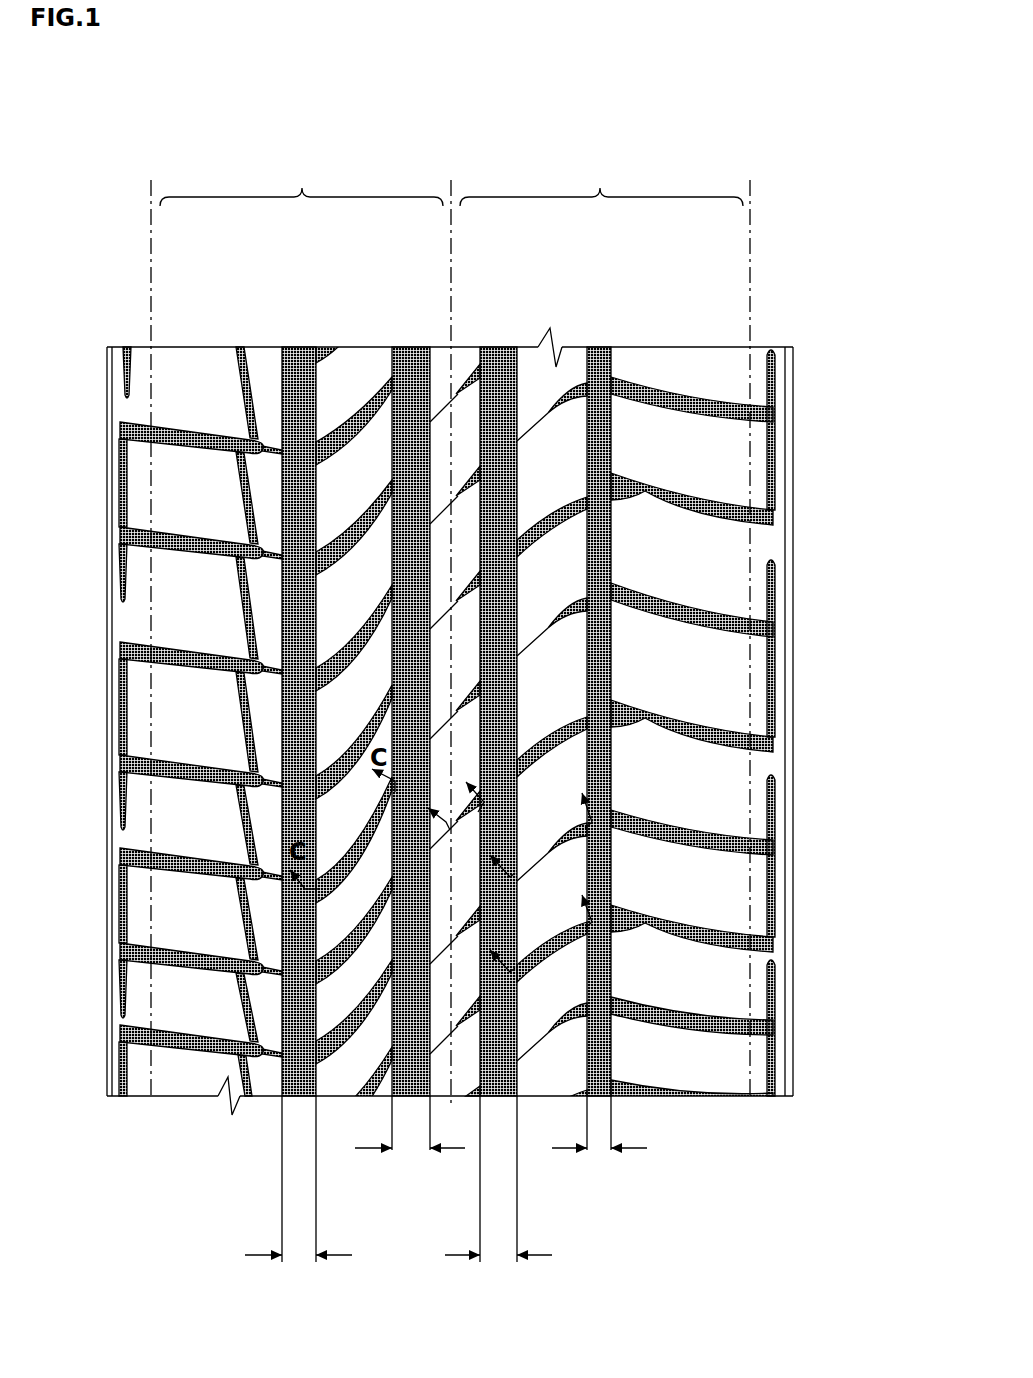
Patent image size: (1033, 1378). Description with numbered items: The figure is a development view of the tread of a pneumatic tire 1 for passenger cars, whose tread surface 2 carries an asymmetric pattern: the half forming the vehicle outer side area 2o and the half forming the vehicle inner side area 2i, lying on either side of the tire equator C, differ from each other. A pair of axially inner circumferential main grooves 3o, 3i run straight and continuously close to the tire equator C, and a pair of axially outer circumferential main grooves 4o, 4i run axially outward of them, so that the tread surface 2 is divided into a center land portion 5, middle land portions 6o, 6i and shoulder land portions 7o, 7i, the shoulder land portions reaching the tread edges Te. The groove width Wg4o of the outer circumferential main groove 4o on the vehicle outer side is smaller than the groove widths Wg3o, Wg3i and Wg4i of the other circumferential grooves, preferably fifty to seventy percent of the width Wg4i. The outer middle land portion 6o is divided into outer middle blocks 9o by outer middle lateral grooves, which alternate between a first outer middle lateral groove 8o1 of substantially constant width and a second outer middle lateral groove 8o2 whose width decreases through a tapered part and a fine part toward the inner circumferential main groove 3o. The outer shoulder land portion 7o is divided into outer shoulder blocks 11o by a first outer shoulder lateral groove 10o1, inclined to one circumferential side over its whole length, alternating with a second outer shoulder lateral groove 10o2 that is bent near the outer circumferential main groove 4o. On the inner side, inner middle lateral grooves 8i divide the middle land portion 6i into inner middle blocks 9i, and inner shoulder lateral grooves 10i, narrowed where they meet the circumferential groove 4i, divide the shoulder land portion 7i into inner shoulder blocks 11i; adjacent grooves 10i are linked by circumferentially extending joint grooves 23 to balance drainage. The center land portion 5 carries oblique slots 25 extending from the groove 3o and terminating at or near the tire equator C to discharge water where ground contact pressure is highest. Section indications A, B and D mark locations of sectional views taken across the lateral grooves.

The pneumatic tire 1 is at (776, 190).
The tread surface 2 is at (778, 240).
The vehicle inner side area 2i is at (301, 179).
The vehicle outer side area 2o is at (601, 179).
The inner circumferential main groove in the vehicle inner side area 3i is at (405, 350).
The inner circumferential main groove in the vehicle outer side area 3o is at (504, 360).
The outer circumferential main groove in the vehicle inner side area 4i is at (292, 350).
The outer circumferential main groove in the vehicle outer side area 4o is at (596, 360).
The center land portion 5 is at (489, 747).
The inner middle land portion 6i is at (218, 737).
The outer middle land portion 6o is at (557, 804).
The inner shoulder land portion 7i is at (163, 744).
The outer shoulder land portion 7o is at (742, 780).
The inner middle lateral groove 8i is at (355, 522).
The first outer middle lateral groove 8o1 is at (752, 540).
The second outer middle lateral groove 8o2 is at (612, 418).
The inner middle block 9i is at (368, 606).
The outer middle block 9o is at (574, 699).
The inner shoulder lateral groove 10i is at (197, 672).
The first outer shoulder lateral groove 10o1 is at (697, 740).
The second outer shoulder lateral groove 10o2 is at (662, 822).
The inner shoulder block 11i is at (222, 614).
The outer shoulder block 11o is at (712, 674).
The joint groove 23 is at (226, 360).
The slot 25 is at (461, 360).
The tire equator C is at (449, 629).
The tread edge Te is at (150, 292).
The groove width of inner circumferential main groove 3i Wg3i is at (410, 1142).
The groove width of inner circumferential main groove 3o Wg3o is at (498, 1194).
The groove width of outer circumferential main groove 4i Wg4i is at (298, 1191).
The groove width of outer circumferential main groove 4o Wg4o is at (599, 1141).
The section line A- A is at (538, 921).
The section line B- B is at (538, 822).
The section line D- D is at (446, 789).